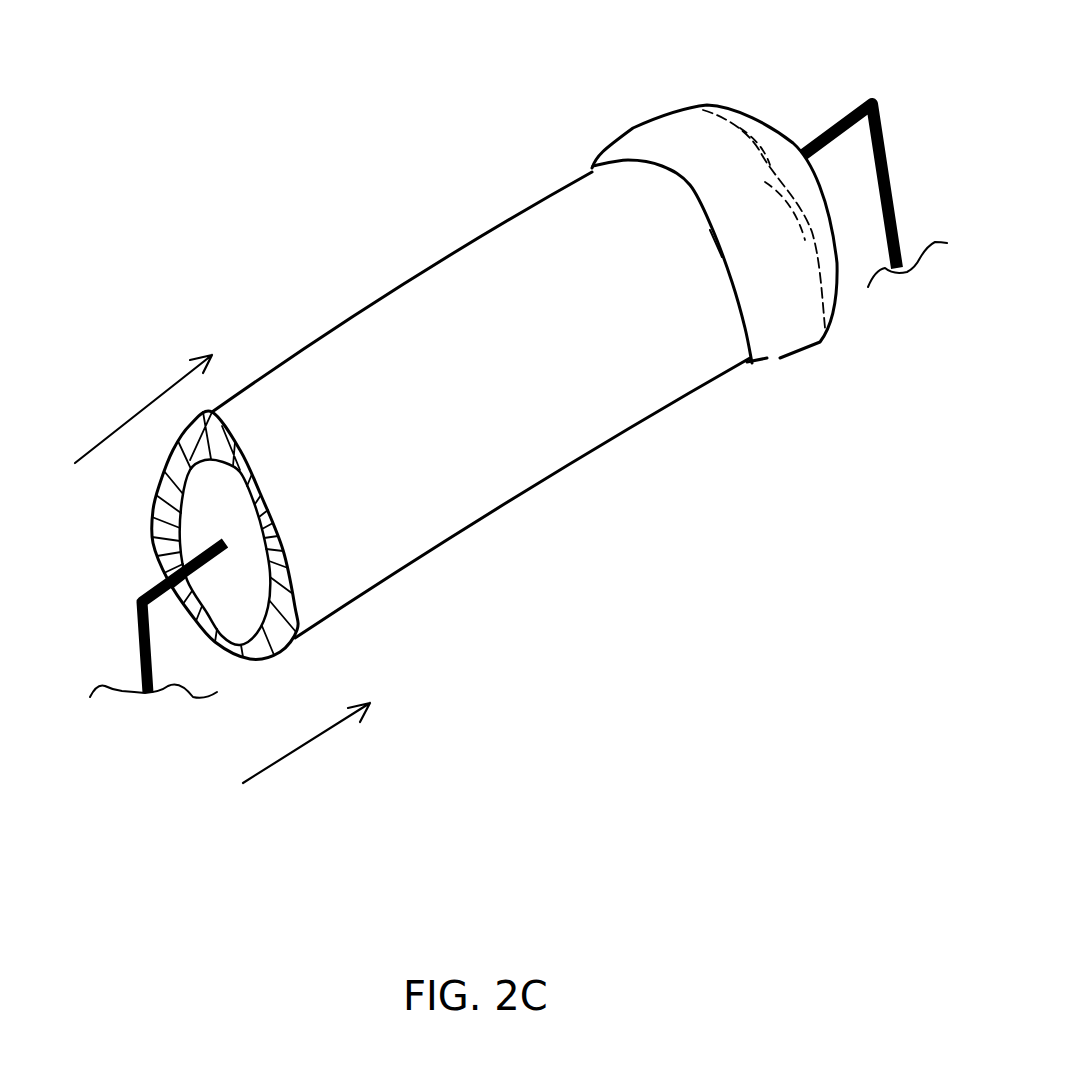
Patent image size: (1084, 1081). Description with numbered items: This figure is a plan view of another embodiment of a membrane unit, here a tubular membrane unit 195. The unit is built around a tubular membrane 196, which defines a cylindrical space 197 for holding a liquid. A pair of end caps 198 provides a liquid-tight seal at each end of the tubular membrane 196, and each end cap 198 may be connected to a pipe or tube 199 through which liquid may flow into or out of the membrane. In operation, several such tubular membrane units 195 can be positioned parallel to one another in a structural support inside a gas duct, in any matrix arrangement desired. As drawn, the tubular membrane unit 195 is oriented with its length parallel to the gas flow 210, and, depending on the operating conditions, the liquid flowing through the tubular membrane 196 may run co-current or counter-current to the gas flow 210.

The tubular membrane unit 195 is at (437, 213).
The tubular membrane 196 is at (532, 458).
The cylindrical space 197 is at (249, 613).
The end cap 198 is at (693, 130).
The pipe or tube 199 is at (847, 113).
The gas flow 210 is at (160, 392).